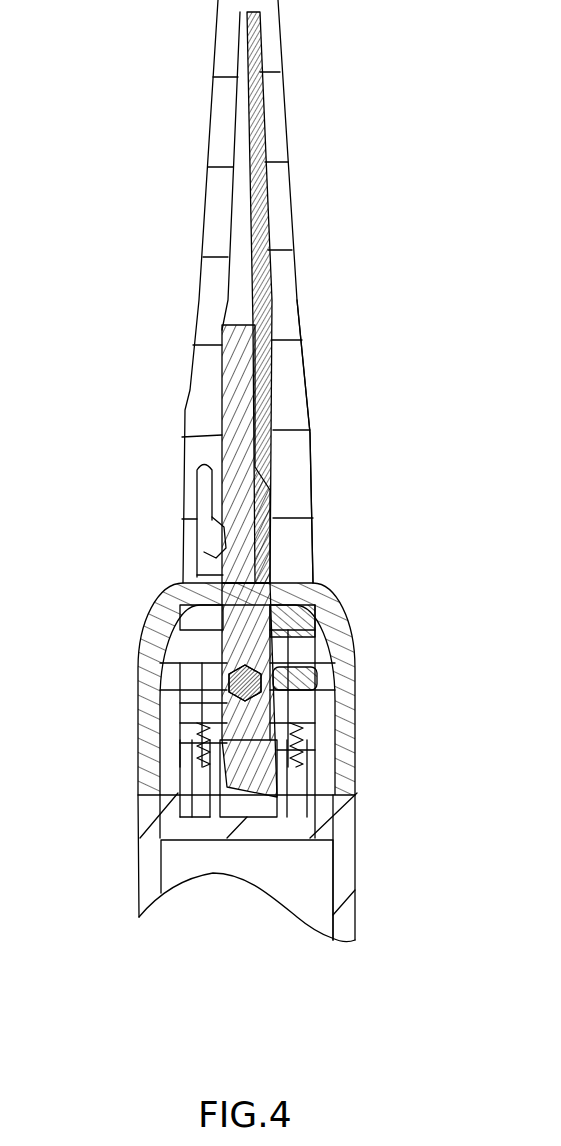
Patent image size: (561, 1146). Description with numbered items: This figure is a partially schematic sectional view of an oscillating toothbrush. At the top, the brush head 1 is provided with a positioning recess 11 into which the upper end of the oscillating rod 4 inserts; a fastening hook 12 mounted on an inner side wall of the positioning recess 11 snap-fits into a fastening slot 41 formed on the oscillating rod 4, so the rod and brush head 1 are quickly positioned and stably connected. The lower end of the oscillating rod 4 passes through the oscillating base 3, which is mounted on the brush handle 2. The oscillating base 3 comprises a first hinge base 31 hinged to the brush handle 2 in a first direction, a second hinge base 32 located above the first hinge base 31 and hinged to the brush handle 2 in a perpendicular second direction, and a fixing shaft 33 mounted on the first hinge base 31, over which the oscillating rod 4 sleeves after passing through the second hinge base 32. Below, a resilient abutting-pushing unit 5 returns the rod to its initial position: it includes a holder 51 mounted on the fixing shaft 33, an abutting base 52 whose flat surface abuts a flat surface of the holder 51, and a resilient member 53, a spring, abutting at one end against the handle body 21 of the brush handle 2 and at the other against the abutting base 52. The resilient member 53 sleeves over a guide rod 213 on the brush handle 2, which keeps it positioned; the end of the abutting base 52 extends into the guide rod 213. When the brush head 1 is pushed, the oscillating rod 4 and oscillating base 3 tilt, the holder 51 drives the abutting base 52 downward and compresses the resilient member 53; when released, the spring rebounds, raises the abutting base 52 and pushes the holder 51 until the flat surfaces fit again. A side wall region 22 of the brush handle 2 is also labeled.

The brush head 1 is at (273, 130).
The positioning recess 11 is at (272, 418).
The fastening hook 12 is at (197, 552).
The oscillating rod 4 is at (240, 388).
The fastening slot 41 is at (222, 522).
The oscillating base 3 is at (461, 588).
The first hinge base 31 is at (262, 672).
The second hinge base 32 is at (285, 620).
The fixing shaft 33 is at (318, 682).
The resilient abutting-pushing unit 5 is at (52, 718).
The holder 51 is at (183, 703).
The abutting base 52 is at (200, 733).
The resilient member 53 is at (182, 778).
The brush handle 2 is at (461, 763).
The handle body 21 is at (355, 798).
The side wall 22 is at (343, 757).
The guide rod 213 is at (317, 836).